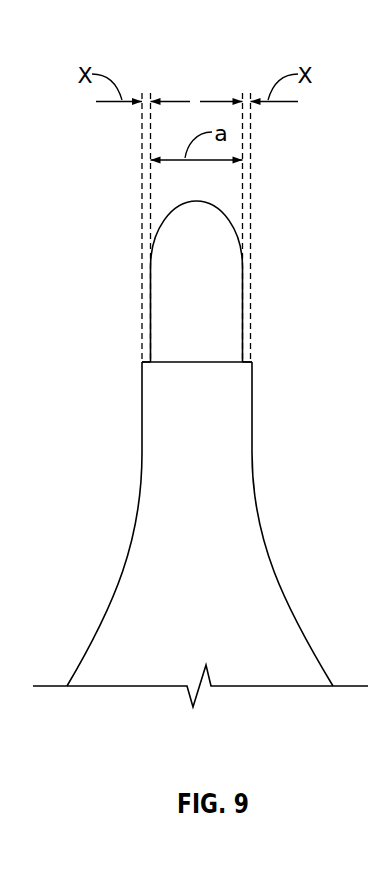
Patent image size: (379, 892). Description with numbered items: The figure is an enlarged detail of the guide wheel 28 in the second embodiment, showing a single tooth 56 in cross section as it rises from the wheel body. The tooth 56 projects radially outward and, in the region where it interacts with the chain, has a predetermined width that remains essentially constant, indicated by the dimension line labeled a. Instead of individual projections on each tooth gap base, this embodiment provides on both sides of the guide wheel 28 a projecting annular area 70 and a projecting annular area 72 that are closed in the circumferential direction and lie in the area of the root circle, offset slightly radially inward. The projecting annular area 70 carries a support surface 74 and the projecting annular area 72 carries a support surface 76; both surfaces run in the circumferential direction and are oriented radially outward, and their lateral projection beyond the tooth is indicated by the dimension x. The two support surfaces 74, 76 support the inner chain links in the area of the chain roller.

The guide wheel 28 is at (249, 706).
The tooth 56 is at (227, 233).
The projecting annular area 70 is at (152, 405).
The projecting annular area 72 is at (238, 402).
The support surface 74 is at (148, 359).
The support surface 76 is at (244, 359).